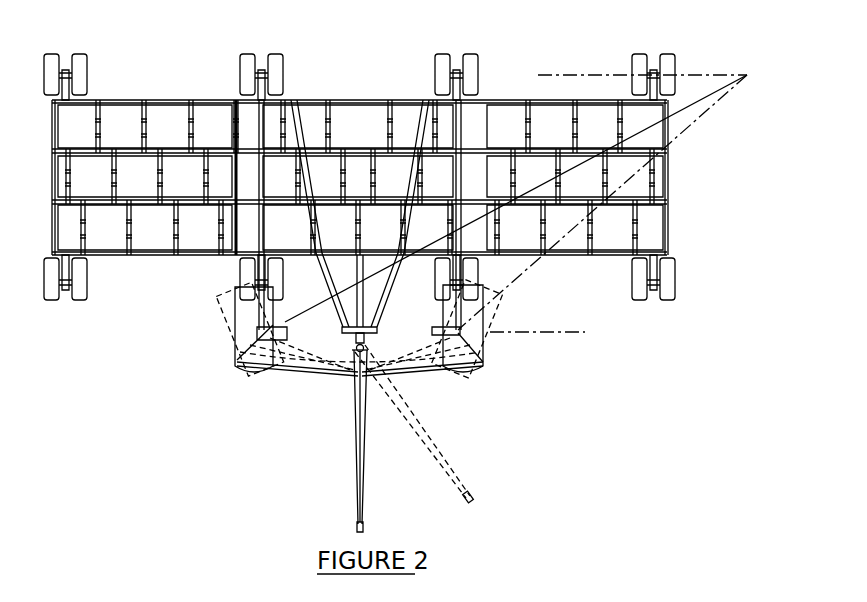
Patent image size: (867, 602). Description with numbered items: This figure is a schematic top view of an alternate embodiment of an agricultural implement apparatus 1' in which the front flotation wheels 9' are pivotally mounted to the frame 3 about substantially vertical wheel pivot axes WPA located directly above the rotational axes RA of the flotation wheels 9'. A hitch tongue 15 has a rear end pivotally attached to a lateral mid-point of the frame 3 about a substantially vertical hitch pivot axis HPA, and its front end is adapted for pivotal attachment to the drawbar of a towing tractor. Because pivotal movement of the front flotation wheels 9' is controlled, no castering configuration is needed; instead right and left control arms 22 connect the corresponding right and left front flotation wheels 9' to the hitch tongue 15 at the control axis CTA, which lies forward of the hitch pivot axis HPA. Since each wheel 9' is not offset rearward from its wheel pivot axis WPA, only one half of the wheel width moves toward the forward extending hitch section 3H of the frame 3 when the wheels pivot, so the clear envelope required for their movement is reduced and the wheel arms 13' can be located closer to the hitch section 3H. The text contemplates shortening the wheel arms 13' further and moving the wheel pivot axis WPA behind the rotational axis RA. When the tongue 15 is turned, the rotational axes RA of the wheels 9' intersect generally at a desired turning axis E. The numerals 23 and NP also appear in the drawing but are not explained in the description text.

The agricultural implement apparatus 1' is at (359, 168).
The frame 3 is at (505, 100).
The forward extending hitch section 3H is at (327, 290).
The wheel arms 13' is at (209, 215).
The front flotation wheels 9' is at (462, 344).
The control arms 22 is at (433, 370).
The hitch pivot 23 is at (347, 375).
The hitch tongue 15 is at (380, 487).
The drawbar pole NP is at (348, 445).
The turning axis E is at (747, 75).
The rotational axes RA is at (550, 333).
The wheel pivot axes WPA is at (236, 332).
The hitch pivot axis HPA is at (350, 343).
The control axis CTA is at (316, 428).